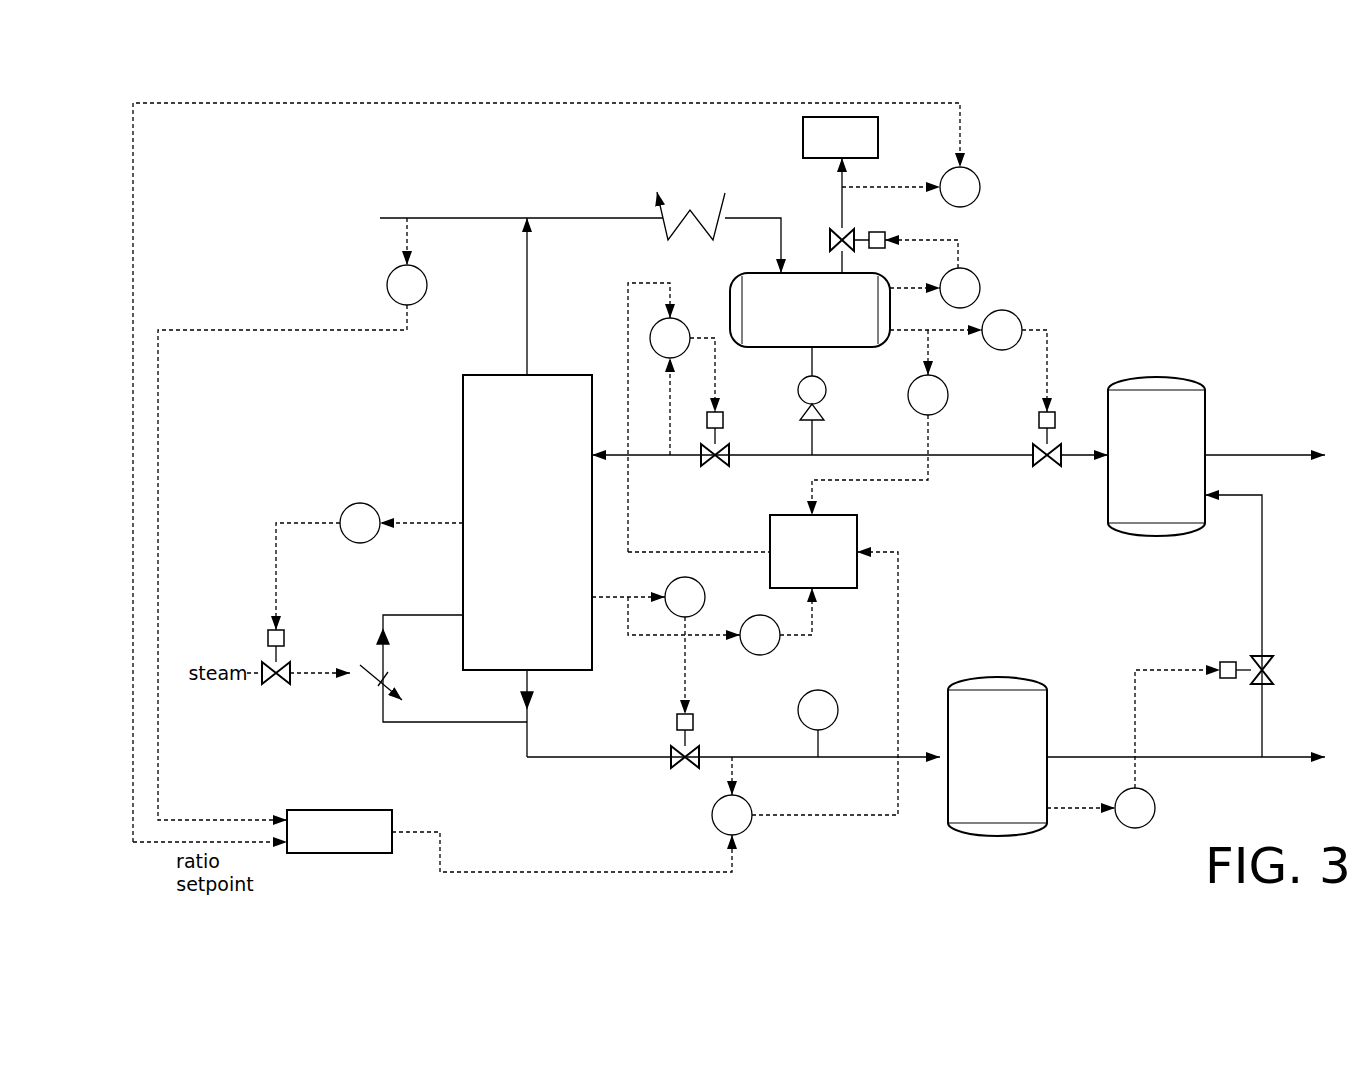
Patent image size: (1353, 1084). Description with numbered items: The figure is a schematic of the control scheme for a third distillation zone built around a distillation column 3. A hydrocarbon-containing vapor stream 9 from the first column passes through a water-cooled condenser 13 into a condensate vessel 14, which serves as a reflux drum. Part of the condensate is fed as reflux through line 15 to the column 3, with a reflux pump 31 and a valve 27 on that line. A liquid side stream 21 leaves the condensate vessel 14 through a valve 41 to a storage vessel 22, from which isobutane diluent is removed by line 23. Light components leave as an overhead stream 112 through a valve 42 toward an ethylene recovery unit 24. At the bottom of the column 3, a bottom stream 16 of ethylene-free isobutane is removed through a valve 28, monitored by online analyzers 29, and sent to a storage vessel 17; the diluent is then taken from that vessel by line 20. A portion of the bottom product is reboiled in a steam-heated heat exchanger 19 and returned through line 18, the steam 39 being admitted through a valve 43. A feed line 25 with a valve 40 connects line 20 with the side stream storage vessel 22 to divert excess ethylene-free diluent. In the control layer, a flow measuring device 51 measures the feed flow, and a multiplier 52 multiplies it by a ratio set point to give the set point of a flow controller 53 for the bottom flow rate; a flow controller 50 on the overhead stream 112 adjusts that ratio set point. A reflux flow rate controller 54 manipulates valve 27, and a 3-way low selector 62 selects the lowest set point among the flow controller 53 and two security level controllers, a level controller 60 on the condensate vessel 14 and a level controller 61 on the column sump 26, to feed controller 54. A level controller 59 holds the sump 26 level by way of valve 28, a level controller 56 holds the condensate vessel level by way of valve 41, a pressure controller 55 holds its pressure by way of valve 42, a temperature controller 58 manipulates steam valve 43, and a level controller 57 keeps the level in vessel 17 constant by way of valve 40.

The distillation column 3 is at (527, 487).
The vapor stream 9 is at (432, 217).
The condenser 13 is at (684, 202).
The condensate vessel 14 is at (810, 310).
The reflux line 15 is at (657, 460).
The bottom stream 16 is at (575, 755).
The storage vessel 17 is at (997, 756).
The line 18 is at (412, 613).
The steam-heated heat exchanger 19 is at (368, 683).
The line 20 is at (1068, 755).
The side stream 21 is at (1093, 460).
The storage vessel 22 is at (1156, 456).
The line 23 is at (1260, 450).
The ethylene recovery unit 24 is at (840, 137).
The feed line 25 is at (1264, 570).
The column sump 26 is at (594, 650).
The valve 27 is at (725, 420).
The valve 28 is at (696, 722).
The online analyzers 29 is at (838, 704).
The reflux pump 31 is at (826, 388).
The steam 39 is at (312, 678).
The valve 40 is at (1226, 658).
The valve 41 is at (1057, 420).
The valve 42 is at (877, 231).
The valve 43 is at (286, 638).
The flow controller 50 is at (976, 174).
The flow measuring device 51 is at (428, 283).
The multiplier 52 is at (336, 808).
The flow controller 53 is at (748, 800).
The reflux flow rate controller 54 is at (684, 324).
The pressure controller 55 is at (976, 274).
The level controller 56 is at (1018, 316).
The level controller 57 is at (1154, 798).
The temperature controller 58 is at (362, 502).
The level controller 59 is at (705, 590).
The level controller 60 is at (948, 392).
The level controller 61 is at (778, 651).
The 3-way low selector 62 is at (860, 528).
The overhead stream 112 is at (838, 198).